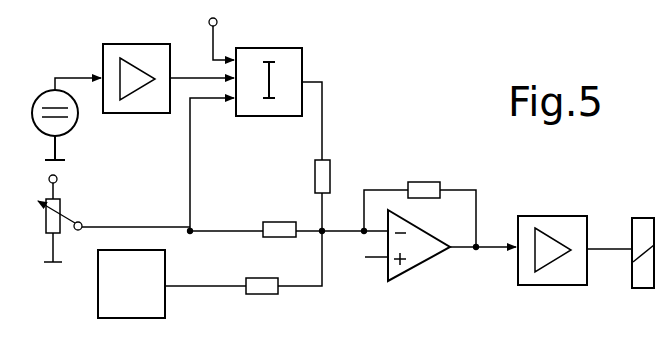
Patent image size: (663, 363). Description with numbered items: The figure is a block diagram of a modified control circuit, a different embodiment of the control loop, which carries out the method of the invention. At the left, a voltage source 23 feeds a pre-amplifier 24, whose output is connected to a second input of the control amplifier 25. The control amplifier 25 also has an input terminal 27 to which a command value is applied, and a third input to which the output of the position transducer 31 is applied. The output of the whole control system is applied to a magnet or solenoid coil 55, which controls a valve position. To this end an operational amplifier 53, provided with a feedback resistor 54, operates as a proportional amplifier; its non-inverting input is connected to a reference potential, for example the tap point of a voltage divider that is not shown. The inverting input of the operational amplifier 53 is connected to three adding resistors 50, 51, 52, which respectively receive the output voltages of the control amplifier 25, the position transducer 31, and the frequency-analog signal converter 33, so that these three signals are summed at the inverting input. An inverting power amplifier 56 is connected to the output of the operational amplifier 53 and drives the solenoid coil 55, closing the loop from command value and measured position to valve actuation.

The voltage source 23 is at (75, 128).
The pre-amplifier 24 is at (130, 113).
The control amplifier 25 is at (297, 69).
The input terminal 27 is at (217, 22).
The position transducer 31 is at (60, 210).
The frequency-analog signal converter 33 is at (165, 303).
The adding resistor 50 is at (330, 176).
The adding resistor 51 is at (280, 232).
The adding resistor 52 is at (262, 290).
The operational amplifier 53 is at (417, 256).
The feedback resistor 54 is at (424, 182).
The solenoid coil 55 is at (643, 288).
The inverting power amplifier 56 is at (558, 277).